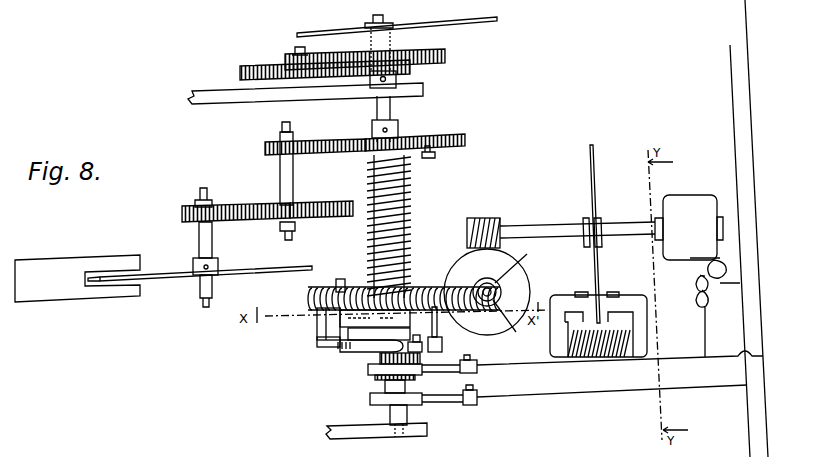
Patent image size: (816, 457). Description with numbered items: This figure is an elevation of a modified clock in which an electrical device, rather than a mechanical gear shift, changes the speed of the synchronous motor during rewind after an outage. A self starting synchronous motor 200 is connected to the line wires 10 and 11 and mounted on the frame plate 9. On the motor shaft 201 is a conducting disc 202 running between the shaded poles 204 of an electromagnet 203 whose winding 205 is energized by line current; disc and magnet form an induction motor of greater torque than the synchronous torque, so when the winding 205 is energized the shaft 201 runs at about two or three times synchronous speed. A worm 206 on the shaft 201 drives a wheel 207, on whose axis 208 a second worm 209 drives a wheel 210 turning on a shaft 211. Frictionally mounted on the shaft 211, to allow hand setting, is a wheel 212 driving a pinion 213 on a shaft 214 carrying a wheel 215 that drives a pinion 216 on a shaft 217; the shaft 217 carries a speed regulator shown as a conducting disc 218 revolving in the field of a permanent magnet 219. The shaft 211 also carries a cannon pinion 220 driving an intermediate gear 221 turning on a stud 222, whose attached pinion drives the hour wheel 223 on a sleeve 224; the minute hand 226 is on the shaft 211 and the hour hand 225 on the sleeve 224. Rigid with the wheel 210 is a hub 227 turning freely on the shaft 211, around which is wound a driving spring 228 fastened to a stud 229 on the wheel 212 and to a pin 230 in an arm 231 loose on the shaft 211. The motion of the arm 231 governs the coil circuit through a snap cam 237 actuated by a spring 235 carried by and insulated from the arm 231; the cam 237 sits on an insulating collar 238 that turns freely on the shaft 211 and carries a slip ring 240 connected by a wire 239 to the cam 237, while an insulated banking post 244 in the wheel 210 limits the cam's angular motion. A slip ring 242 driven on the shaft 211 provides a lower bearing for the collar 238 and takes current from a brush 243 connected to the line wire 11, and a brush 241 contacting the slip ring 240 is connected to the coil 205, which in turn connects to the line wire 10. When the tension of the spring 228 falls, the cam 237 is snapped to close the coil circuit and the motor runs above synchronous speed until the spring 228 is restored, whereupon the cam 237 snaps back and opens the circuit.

The frame plate 9 is at (214, 91).
The line wire 10 is at (745, 5).
The line wire 11 is at (731, 47).
The self starting synchronous motor 200 is at (708, 197).
The motor shaft 201 is at (645, 220).
The conducting disc 202 is at (592, 192).
The electromagnet 203 is at (641, 327).
The shaded poles 204 is at (582, 292).
The winding 205 is at (583, 356).
The worm 206 is at (482, 221).
The wheel 207 is at (487, 292).
The axis 208 is at (522, 267).
The second worm 209 is at (513, 324).
The wheel 210 is at (424, 285).
The shaft 211 is at (392, 103).
The wheel 212 is at (466, 138).
The pinion 213 is at (264, 146).
The shaft 214 is at (281, 170).
The wheel 215 is at (327, 199).
The pinion 216 is at (183, 211).
The shaft 217 is at (213, 241).
The conducting disc 218 is at (226, 282).
The permanent magnet 219 is at (72, 260).
The cannon pinion 220 is at (398, 80).
The intermediate gear 221 is at (259, 65).
The stud 222 is at (294, 48).
The hour wheel 223 is at (447, 52).
The sleeve 224 is at (393, 40).
The hour hand 225 is at (352, 31).
The minute hand 226 is at (441, 8).
The sleeve or hub 227 is at (386, 216).
The driving spring 228 is at (409, 183).
The stud 229 is at (435, 157).
The pin 230 is at (341, 278).
The arm 231 is at (330, 318).
The spring 235 is at (335, 348).
The snap cam 237 is at (418, 339).
The insulating collar 238 is at (374, 379).
The wire 239 is at (450, 345).
The slip ring 240 is at (367, 372).
The brush 241 is at (449, 371).
The slip ring 242 is at (410, 405).
The brush 243 is at (465, 403).
The insulated banking post 244 is at (439, 328).